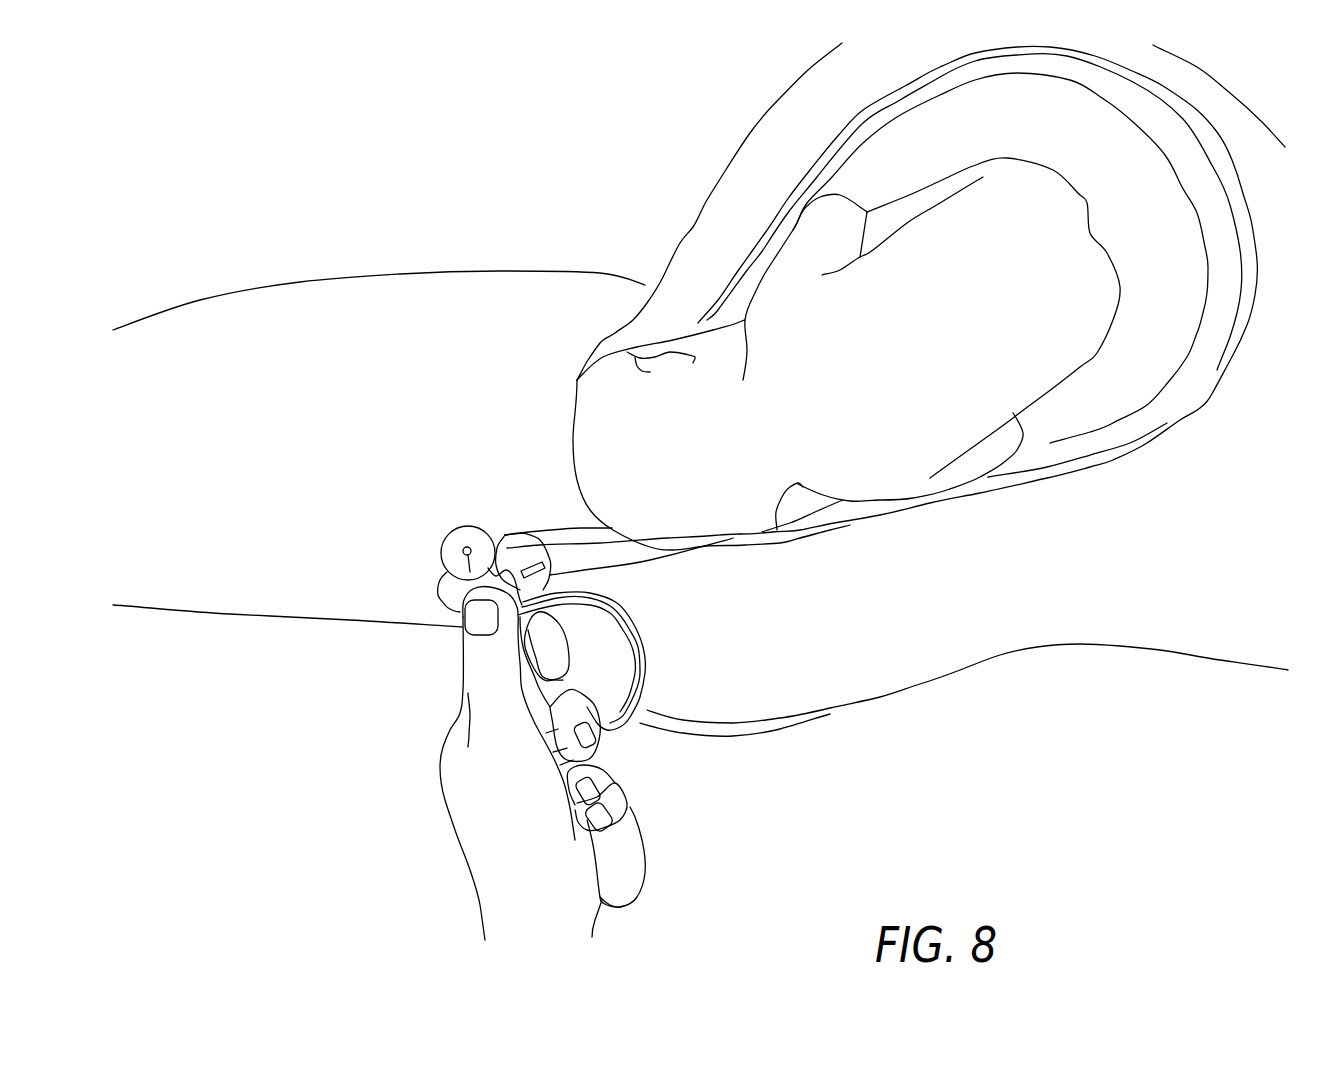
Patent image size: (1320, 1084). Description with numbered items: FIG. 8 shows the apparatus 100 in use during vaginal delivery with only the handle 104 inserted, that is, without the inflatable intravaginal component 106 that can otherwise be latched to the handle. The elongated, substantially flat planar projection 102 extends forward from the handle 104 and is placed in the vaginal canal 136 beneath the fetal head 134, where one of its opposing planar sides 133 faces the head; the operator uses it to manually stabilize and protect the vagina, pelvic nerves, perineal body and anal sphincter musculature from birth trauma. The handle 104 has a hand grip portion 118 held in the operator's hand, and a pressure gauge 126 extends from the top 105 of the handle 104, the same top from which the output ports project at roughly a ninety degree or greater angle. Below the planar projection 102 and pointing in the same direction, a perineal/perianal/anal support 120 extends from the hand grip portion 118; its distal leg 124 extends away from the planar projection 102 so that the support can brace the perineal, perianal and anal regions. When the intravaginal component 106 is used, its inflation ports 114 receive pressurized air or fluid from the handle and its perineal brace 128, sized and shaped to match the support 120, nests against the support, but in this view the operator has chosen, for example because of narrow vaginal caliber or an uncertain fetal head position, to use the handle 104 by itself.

The apparatus 100 is at (435, 603).
The planar projection 102 is at (537, 480).
The handle 104 is at (547, 707).
The top of the handle 105 is at (440, 587).
The intravaginal component 106 is at (560, 430).
The inflation ports 114 is at (633, 828).
The hand grip portion 118 is at (630, 869).
The perineal/perianal/anal support 120 is at (683, 792).
The distal leg 124 is at (613, 703).
The pressure gauge 126 is at (437, 547).
The perineal brace 128 is at (610, 600).
The planar side 133 is at (590, 560).
The fetal head 134 is at (610, 427).
The vaginal canal 136 is at (700, 325).